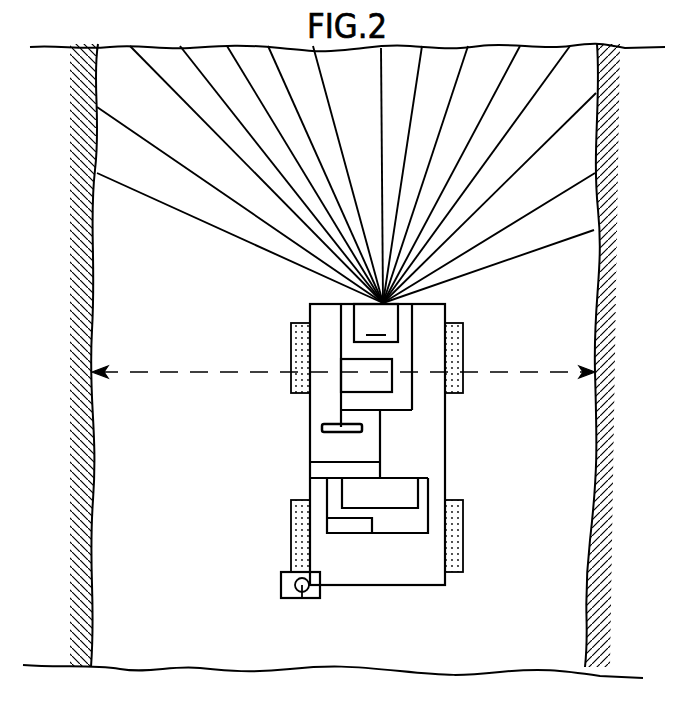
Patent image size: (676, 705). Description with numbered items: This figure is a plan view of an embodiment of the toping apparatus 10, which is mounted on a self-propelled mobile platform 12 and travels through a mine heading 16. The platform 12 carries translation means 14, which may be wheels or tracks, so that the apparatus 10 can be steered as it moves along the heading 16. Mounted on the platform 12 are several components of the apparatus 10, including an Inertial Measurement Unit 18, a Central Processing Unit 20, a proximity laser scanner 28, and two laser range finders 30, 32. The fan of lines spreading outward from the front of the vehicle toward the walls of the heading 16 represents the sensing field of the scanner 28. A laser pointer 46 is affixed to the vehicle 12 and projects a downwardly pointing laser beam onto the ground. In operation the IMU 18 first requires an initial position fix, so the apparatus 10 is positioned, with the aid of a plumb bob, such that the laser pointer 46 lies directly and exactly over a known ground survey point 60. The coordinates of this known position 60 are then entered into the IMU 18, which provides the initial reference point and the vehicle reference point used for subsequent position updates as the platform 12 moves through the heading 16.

The toping apparatus 10 is at (370, 466).
The self-propelled mobile platform 12 is at (418, 575).
The translation means 14 is at (301, 325).
The mine heading 16 is at (590, 250).
The Inertial Measurement Unit 18 is at (357, 520).
The Central Processing Unit 20 is at (400, 487).
The Proximity Laser Scanner 28 is at (376, 323).
The Laser Range Finder 30 is at (360, 363).
The Laser Range Finder 32 is at (357, 370).
The Laser Pointer 46 is at (283, 575).
The known ground survey point 60 is at (298, 607).